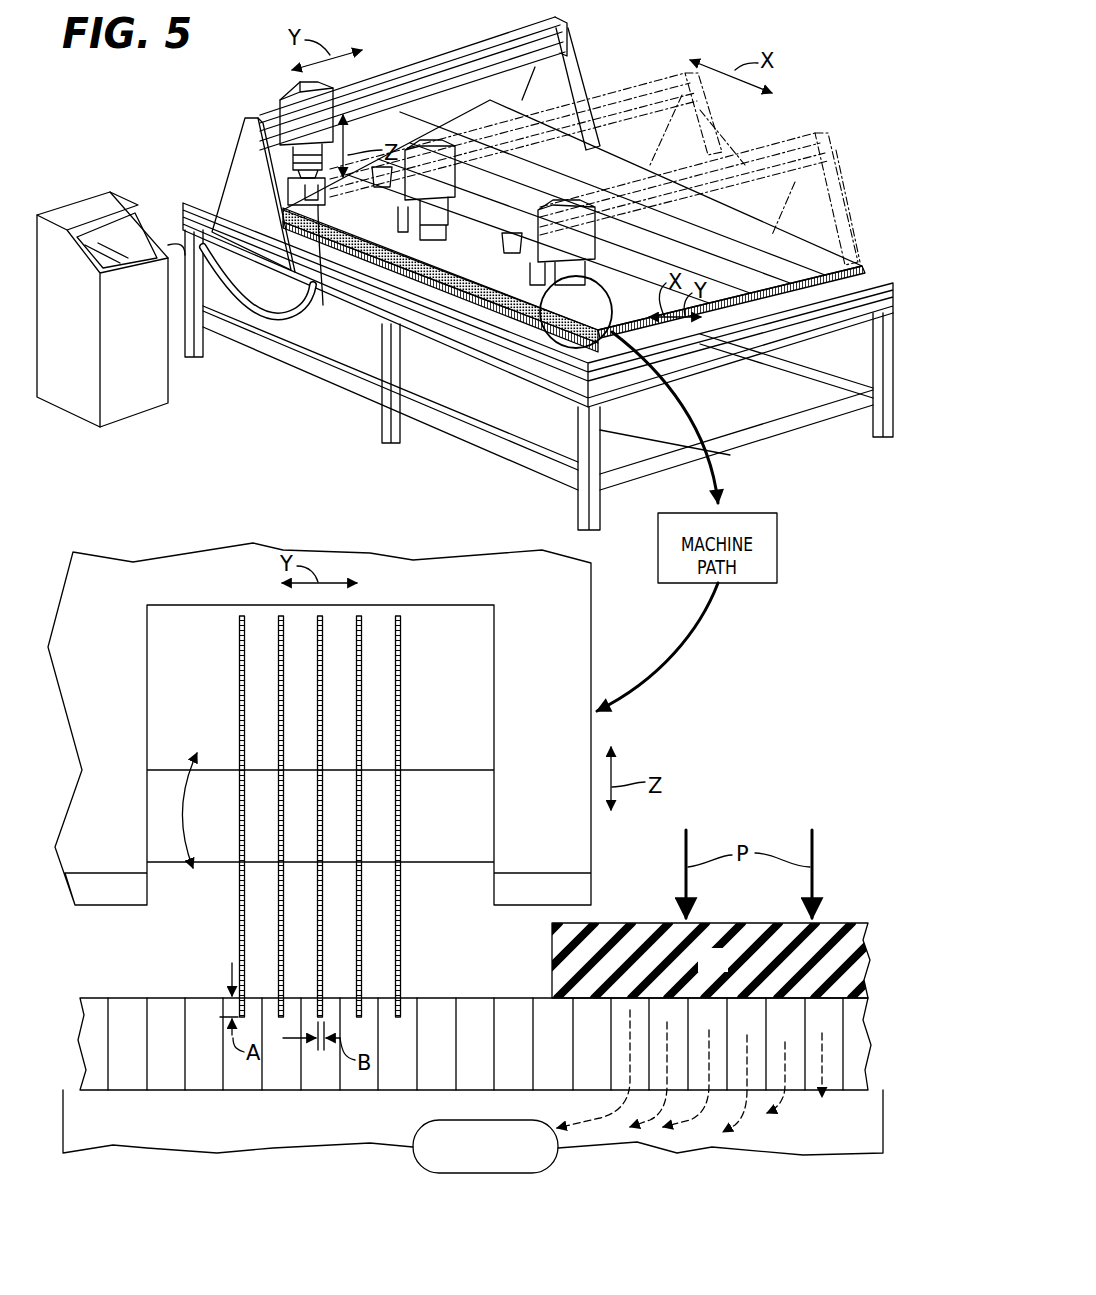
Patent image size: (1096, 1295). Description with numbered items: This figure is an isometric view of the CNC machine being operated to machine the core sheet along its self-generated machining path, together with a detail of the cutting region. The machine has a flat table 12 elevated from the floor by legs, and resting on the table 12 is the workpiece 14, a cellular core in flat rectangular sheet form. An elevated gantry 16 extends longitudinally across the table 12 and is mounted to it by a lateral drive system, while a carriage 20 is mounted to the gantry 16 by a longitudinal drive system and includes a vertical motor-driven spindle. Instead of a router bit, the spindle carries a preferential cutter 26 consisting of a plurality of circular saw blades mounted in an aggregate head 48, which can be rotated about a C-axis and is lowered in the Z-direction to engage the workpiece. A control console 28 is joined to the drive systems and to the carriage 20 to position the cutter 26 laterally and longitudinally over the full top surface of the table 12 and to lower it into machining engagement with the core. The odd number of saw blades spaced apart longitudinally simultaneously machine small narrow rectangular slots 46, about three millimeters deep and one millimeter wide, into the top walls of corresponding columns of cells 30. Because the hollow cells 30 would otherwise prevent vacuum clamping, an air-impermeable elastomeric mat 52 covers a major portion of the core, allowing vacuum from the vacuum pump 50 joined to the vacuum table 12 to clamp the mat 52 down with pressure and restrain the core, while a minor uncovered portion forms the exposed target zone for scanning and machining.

The table 12 is at (868, 268).
The workpiece 14 is at (462, 297).
The gantry 16 is at (577, 47).
The carriage 20 is at (278, 105).
The cutter 26 is at (325, 271).
The control console 28 is at (75, 198).
The cells 30 is at (527, 1054).
The slots 46 is at (402, 1016).
The aggregate head 48 is at (292, 195).
The vacuum pump 50 is at (420, 1128).
The mat 52 is at (803, 263).